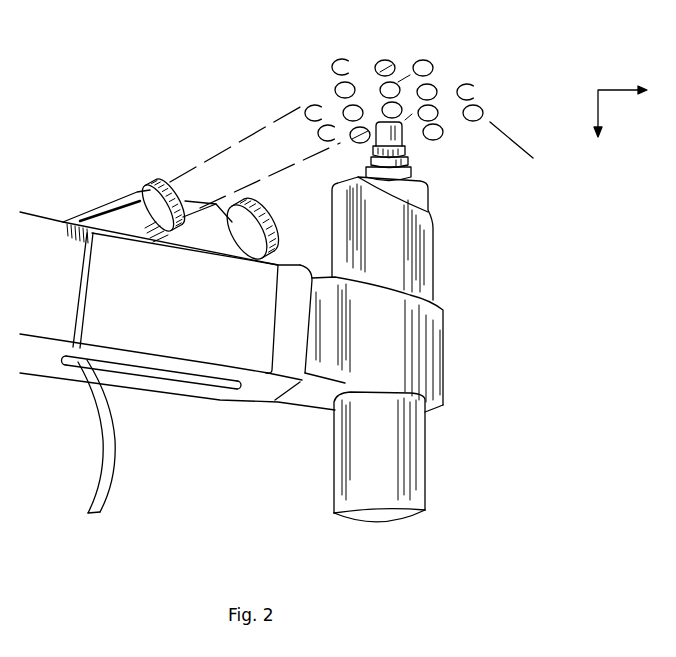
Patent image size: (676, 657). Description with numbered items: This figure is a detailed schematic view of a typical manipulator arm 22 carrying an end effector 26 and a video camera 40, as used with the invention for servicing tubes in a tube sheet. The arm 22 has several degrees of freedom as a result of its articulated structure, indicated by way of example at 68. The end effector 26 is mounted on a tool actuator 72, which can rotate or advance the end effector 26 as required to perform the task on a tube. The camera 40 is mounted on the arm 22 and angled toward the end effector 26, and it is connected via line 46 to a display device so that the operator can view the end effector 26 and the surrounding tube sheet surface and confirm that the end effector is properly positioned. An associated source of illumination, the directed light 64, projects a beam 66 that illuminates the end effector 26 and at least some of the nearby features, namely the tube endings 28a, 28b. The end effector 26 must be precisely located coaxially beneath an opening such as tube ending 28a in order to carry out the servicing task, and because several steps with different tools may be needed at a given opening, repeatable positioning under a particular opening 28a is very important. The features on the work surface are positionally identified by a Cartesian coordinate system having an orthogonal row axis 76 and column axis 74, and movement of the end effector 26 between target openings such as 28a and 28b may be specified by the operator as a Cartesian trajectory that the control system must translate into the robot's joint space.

The manipulator arm 22 is at (196, 305).
The end effector 26 is at (402, 137).
The tube ending 28a is at (387, 105).
The tube ending 28b is at (397, 83).
The video camera 40 is at (287, 240).
The line 46 is at (115, 443).
The directed light 64 is at (112, 208).
The beam 66 is at (203, 163).
The articulated structure 68 is at (302, 380).
The tool actuator 72 is at (433, 253).
The column axis 74 is at (598, 107).
The row axis 76 is at (612, 90).